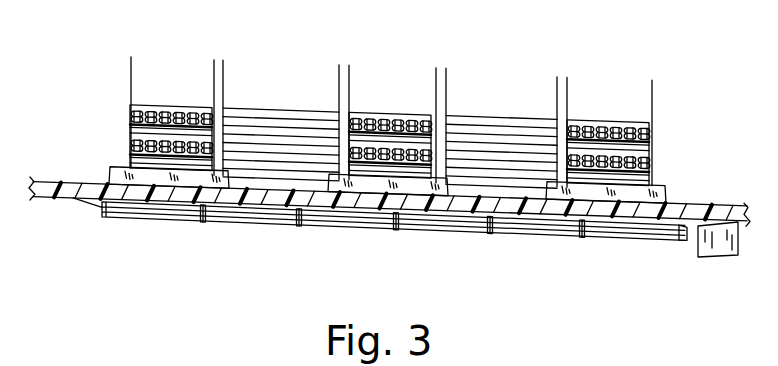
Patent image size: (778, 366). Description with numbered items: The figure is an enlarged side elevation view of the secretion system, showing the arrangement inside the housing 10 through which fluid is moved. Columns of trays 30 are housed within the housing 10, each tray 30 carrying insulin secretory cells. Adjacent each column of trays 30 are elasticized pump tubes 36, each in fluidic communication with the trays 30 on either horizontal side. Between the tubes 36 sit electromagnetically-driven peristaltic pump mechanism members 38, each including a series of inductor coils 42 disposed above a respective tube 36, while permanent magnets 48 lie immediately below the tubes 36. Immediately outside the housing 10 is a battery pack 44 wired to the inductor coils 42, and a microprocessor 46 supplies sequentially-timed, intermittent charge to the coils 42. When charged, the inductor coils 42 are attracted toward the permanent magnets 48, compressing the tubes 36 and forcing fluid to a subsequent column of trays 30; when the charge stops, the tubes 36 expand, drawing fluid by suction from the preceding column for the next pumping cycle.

The housing 10 is at (408, 203).
The tray 30 is at (262, 110).
The elasticized pump tube 36 is at (133, 157).
The electromagnetically-driven peristaltic pump mechanism member 38 is at (137, 105).
The inductor coil 42 is at (187, 143).
The battery pack 44 is at (132, 218).
The microprocessor 46 is at (720, 252).
The permanent magnet 48 is at (122, 177).